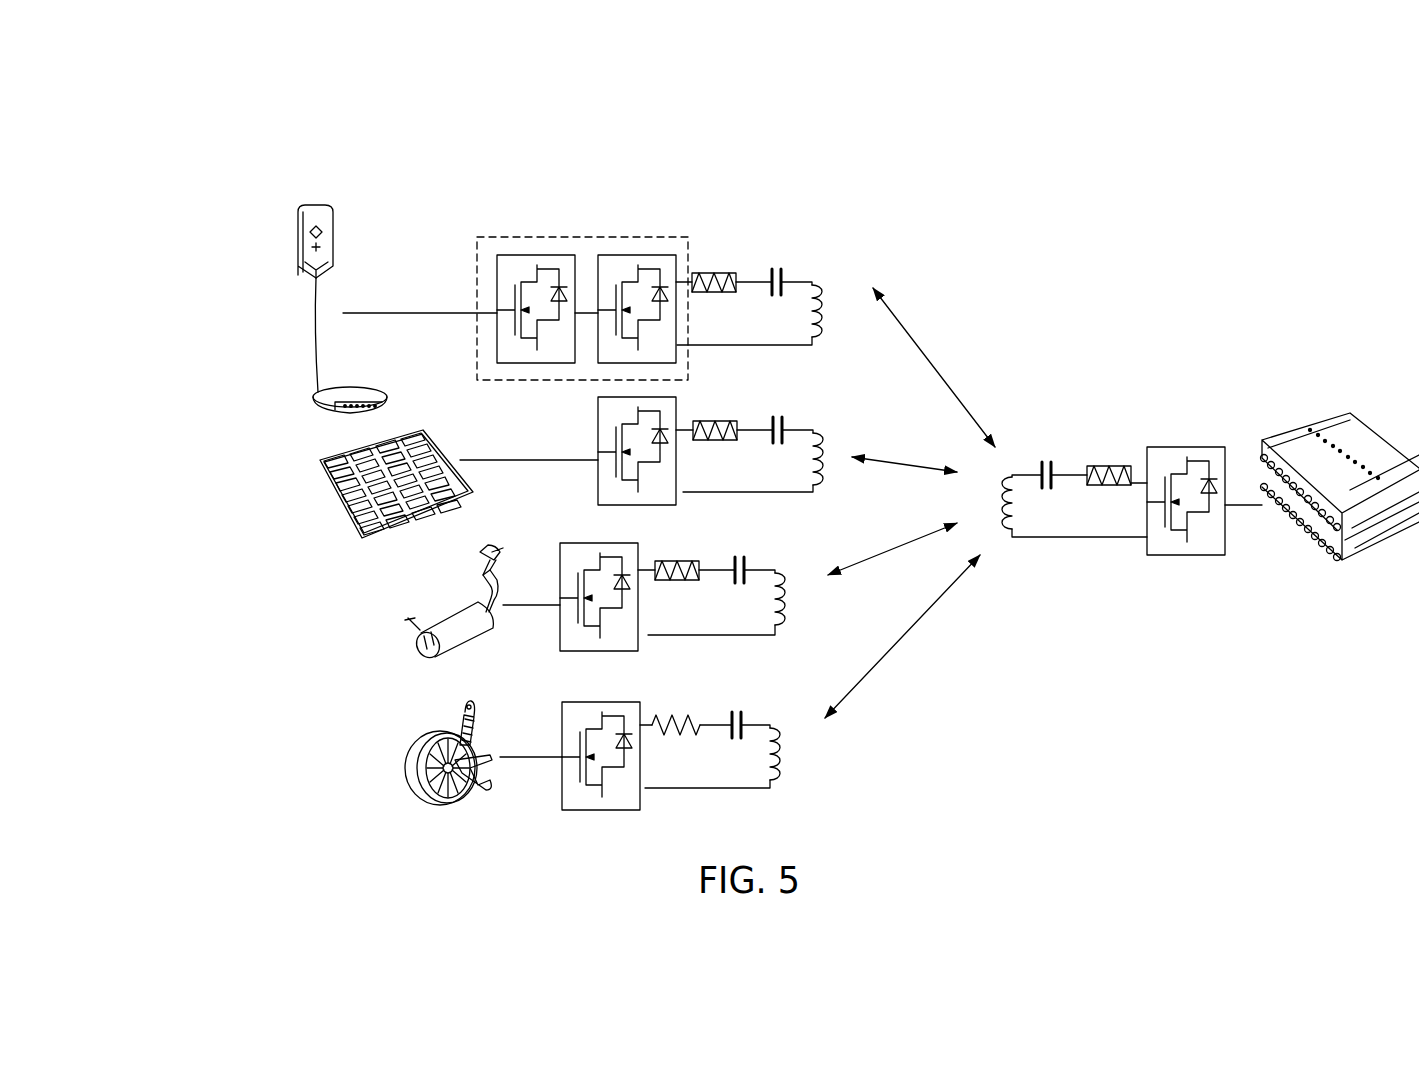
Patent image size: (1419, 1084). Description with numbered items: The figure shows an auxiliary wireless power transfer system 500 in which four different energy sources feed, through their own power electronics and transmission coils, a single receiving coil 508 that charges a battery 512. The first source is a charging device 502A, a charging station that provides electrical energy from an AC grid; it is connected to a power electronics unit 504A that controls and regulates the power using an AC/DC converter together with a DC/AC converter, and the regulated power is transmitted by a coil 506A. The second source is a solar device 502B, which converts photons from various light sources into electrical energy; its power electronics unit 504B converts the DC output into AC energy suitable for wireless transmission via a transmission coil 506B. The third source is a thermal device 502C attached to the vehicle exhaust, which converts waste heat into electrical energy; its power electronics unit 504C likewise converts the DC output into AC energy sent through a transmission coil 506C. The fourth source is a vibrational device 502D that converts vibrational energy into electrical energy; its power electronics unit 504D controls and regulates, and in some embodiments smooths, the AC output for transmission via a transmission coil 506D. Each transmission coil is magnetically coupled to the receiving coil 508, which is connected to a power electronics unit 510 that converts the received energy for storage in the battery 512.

The auxiliary wireless power transfer system 500 is at (208, 178).
The charging device 502A is at (345, 222).
The solar device 502B is at (160, 497).
The thermal device 502C is at (178, 627).
The vibrational device 502D is at (180, 762).
The power electronics unit 504A is at (590, 237).
The power electronics unit 504B is at (598, 470).
The power electronics unit 504C is at (560, 633).
The power electronics unit 504D is at (562, 790).
The coil 506A is at (765, 247).
The transmission coil 506B is at (793, 415).
The transmission coil 506C is at (767, 553).
The transmission coil 506D is at (758, 713).
The receiving coil 508 is at (1085, 440).
The power electronics unit 510 is at (1200, 422).
The battery 512 is at (1377, 422).